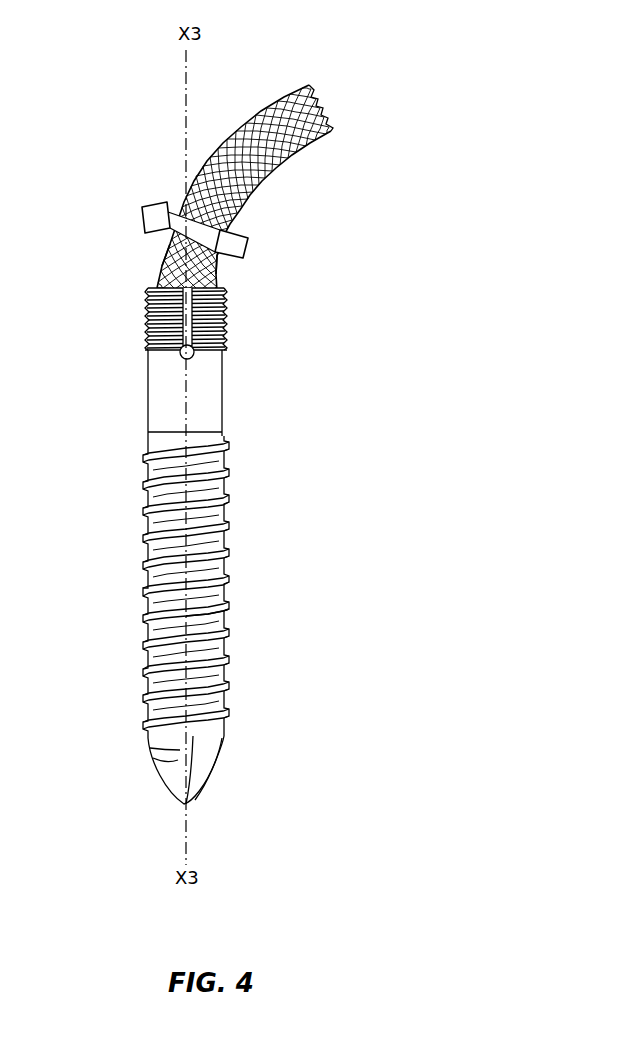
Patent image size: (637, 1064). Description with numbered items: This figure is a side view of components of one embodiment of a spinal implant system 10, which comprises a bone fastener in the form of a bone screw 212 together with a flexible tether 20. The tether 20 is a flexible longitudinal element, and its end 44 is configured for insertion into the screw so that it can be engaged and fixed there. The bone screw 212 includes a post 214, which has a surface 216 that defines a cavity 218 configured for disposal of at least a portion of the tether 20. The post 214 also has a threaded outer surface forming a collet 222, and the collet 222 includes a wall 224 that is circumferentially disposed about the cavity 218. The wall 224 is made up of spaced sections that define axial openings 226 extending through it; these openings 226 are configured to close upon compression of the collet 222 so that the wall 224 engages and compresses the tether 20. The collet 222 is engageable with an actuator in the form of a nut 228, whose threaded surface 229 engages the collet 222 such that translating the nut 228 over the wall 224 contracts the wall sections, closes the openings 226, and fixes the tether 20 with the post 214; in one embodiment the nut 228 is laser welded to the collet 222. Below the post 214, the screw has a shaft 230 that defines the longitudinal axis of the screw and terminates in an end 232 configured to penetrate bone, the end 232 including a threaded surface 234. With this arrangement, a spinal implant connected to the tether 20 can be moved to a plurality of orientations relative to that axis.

The spinal implant system 10 is at (525, 183).
The tether 20 is at (305, 172).
The end 44 is at (216, 278).
The bone screw 212 is at (418, 452).
The post 214 is at (148, 333).
The surface 216 is at (153, 288).
The cavity 218 is at (148, 266).
The collet 222 is at (226, 335).
The wall 224 is at (226, 292).
The axial openings 226 is at (182, 357).
The nut 228 is at (242, 232).
The threaded surface 229 is at (147, 203).
The shaft 230 is at (170, 668).
The end 232 is at (165, 738).
The threaded surface 234 is at (215, 622).